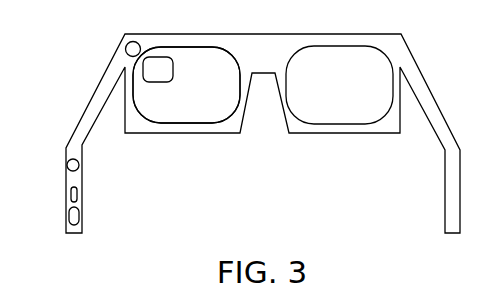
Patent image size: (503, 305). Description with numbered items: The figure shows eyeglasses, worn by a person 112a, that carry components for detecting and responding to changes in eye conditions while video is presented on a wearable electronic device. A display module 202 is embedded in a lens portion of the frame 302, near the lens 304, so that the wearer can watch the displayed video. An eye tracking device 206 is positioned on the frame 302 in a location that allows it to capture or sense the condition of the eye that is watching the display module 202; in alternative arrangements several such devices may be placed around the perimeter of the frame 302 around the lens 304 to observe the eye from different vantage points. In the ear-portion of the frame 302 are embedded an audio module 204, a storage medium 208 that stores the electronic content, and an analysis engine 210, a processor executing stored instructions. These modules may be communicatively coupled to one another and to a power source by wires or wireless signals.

The frame 302 is at (182, 34).
The person 112a is at (260, 34).
The lens 304 is at (203, 117).
The eye tracking device 206 is at (126, 44).
The display module 202 is at (141, 62).
The audio module 204 is at (68, 160).
The storage medium 208 is at (70, 185).
The analysis engine 210 is at (69, 208).